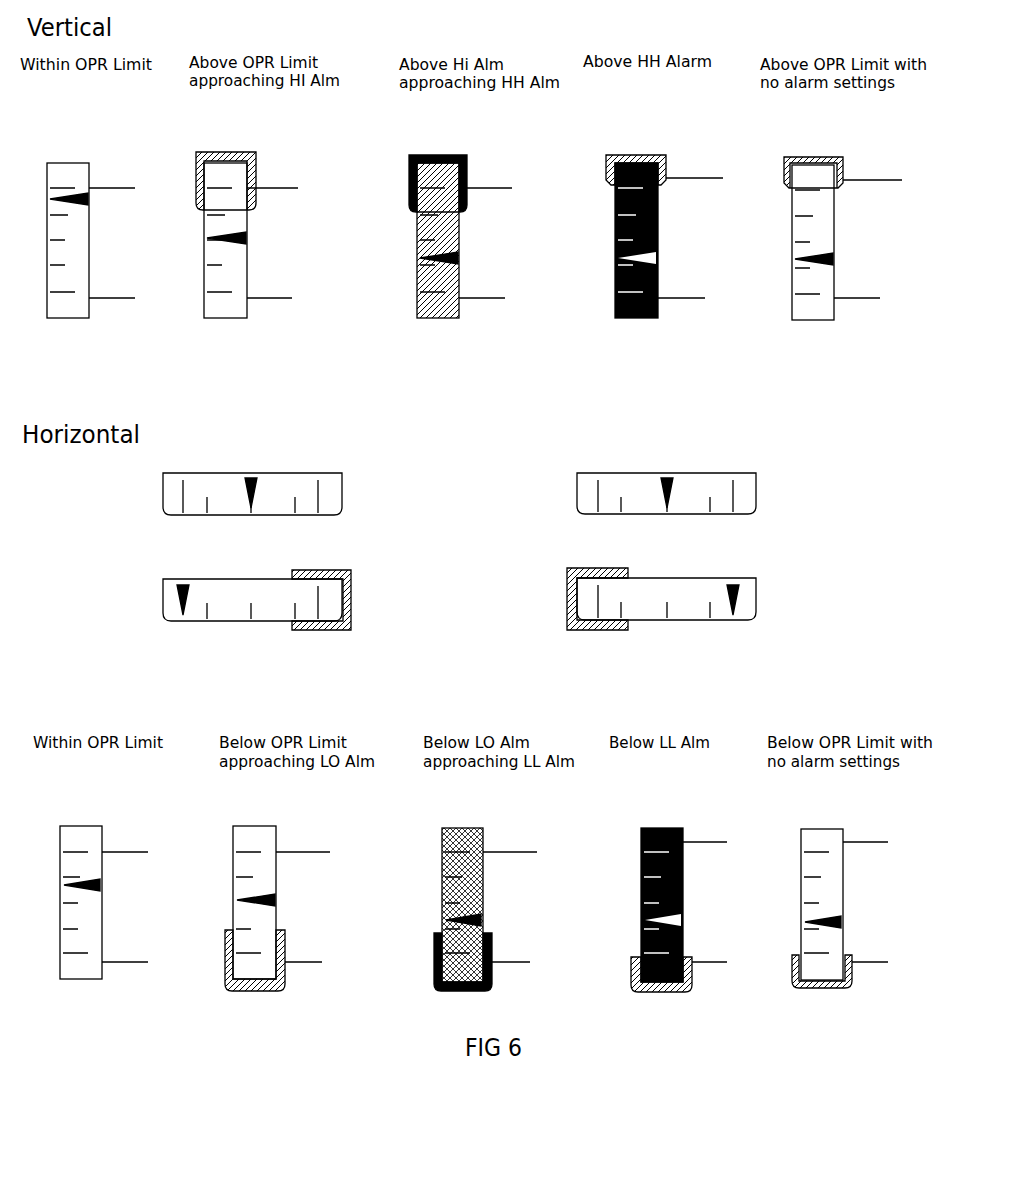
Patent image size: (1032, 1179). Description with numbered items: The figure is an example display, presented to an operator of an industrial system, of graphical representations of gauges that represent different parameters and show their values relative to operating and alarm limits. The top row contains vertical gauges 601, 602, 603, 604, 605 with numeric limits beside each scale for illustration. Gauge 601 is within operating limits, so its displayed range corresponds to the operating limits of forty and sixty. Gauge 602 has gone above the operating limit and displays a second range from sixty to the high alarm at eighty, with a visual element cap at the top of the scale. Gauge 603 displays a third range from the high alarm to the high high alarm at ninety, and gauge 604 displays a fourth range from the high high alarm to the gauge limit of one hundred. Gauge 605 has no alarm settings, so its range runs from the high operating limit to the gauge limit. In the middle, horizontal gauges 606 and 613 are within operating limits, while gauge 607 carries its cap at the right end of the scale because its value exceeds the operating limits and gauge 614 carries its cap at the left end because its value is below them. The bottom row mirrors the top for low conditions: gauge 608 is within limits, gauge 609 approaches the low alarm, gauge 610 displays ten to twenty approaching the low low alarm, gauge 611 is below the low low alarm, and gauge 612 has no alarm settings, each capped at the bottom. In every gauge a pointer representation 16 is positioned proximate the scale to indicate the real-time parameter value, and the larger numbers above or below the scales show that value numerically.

The gauge 601 is at (69, 163).
The gauge 602 is at (247, 245).
The gauge 603 is at (459, 245).
The gauge 604 is at (658, 245).
The gauge 605 is at (834, 244).
The gauge 606 is at (253, 473).
The gauge 607 is at (253, 579).
The gauge 608 is at (60, 942).
The gauge 609 is at (233, 913).
The gauge 610 is at (442, 913).
The gauge 611 is at (641, 935).
The gauge 612 is at (801, 938).
The gauge 613 is at (640, 514).
The gauge 614 is at (640, 620).
The pointer representation 16 is at (102, 885).